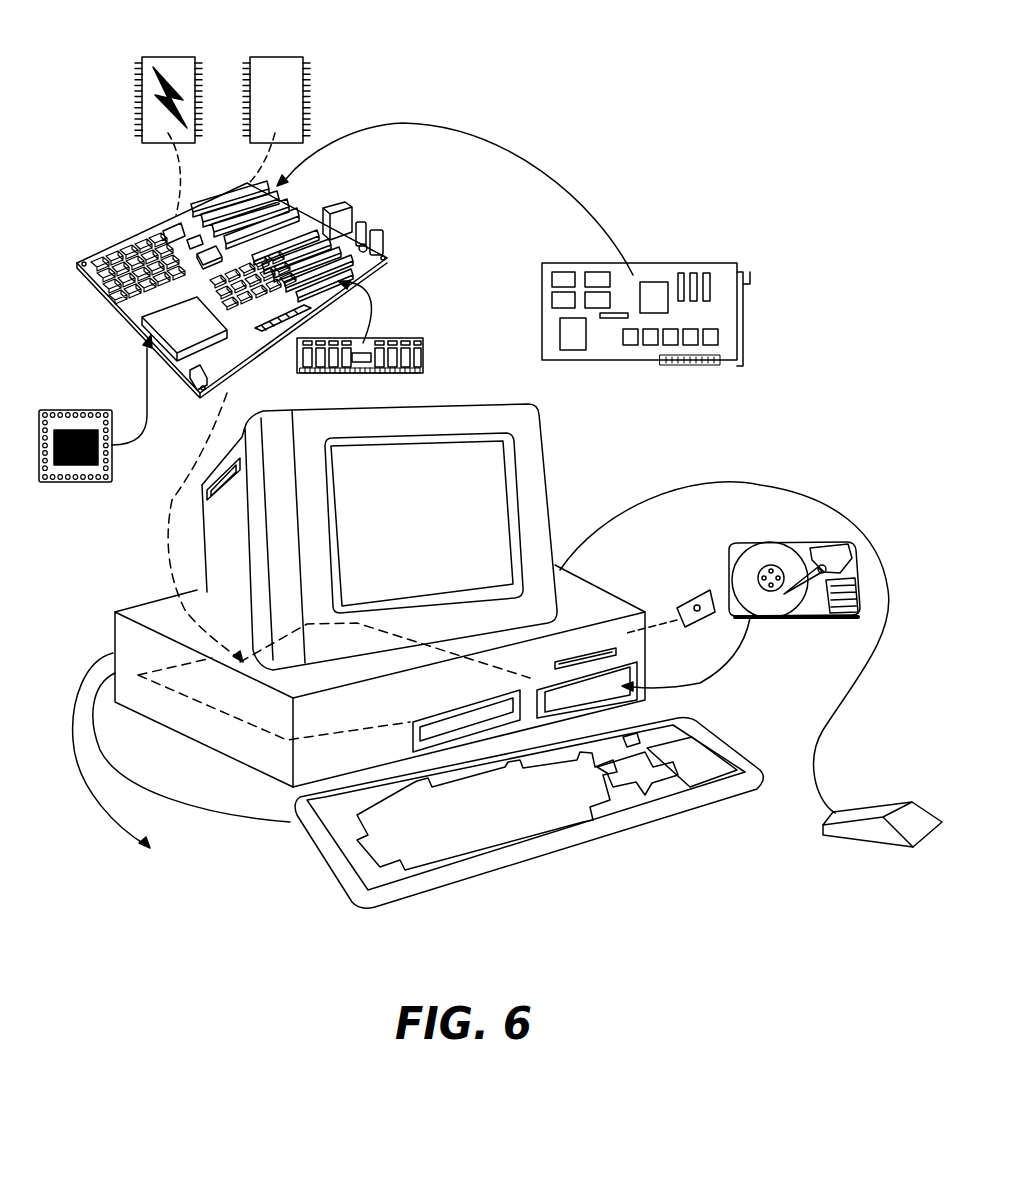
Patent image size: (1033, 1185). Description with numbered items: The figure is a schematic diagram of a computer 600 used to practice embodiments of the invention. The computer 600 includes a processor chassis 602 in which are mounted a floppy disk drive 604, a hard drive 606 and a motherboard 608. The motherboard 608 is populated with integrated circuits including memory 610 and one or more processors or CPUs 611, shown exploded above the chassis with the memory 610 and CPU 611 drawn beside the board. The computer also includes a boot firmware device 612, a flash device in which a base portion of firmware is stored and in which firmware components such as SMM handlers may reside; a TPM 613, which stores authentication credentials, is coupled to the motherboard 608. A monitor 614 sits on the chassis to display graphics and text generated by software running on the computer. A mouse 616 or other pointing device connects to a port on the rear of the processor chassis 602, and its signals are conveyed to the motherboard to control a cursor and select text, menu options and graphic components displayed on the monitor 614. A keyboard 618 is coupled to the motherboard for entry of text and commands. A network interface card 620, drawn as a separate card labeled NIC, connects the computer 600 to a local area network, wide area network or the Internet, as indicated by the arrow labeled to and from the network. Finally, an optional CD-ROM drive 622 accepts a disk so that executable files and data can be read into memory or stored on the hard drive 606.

The computer 600 is at (540, 872).
The processor chassis 602 is at (660, 628).
The floppy disk drive 604 is at (601, 649).
The hard drive 606 is at (810, 617).
The motherboard 608 is at (141, 224).
The memory 610 is at (423, 358).
The processor (CPU) 611 is at (83, 478).
The boot firmware device 612 is at (147, 72).
The TPM 613 is at (292, 68).
The monitor 614 is at (542, 475).
The mouse 616 is at (877, 830).
The keyboard 618 is at (633, 827).
The network interface card 620 is at (732, 316).
The CD-ROM drive 622 is at (414, 734).